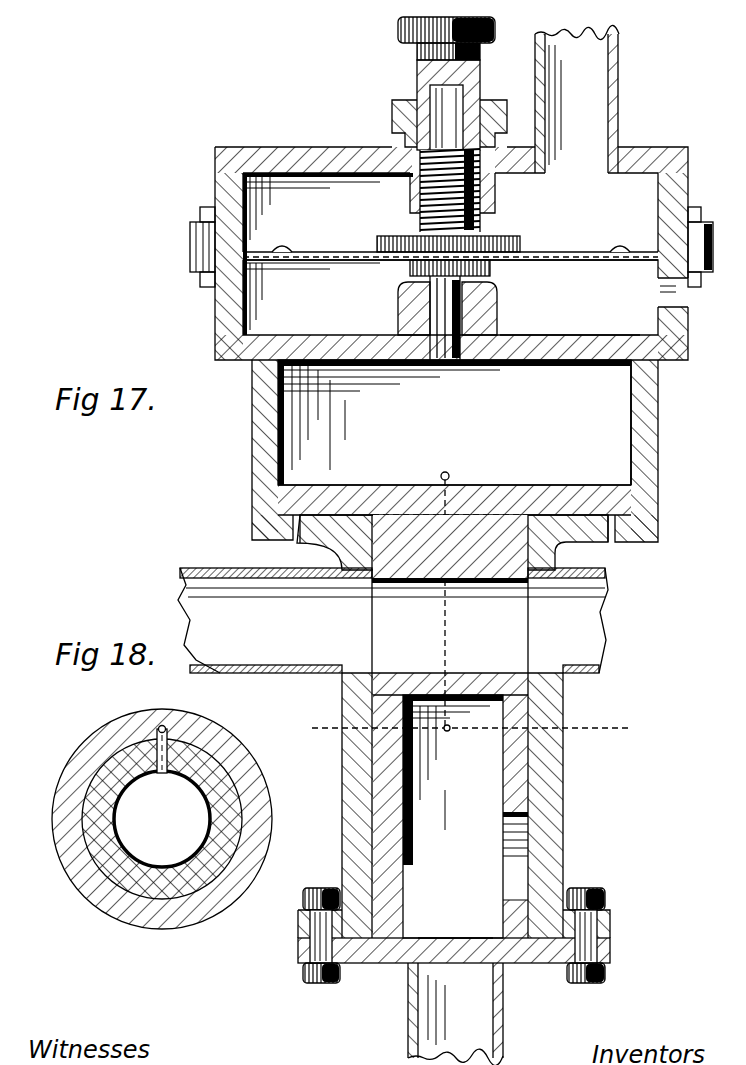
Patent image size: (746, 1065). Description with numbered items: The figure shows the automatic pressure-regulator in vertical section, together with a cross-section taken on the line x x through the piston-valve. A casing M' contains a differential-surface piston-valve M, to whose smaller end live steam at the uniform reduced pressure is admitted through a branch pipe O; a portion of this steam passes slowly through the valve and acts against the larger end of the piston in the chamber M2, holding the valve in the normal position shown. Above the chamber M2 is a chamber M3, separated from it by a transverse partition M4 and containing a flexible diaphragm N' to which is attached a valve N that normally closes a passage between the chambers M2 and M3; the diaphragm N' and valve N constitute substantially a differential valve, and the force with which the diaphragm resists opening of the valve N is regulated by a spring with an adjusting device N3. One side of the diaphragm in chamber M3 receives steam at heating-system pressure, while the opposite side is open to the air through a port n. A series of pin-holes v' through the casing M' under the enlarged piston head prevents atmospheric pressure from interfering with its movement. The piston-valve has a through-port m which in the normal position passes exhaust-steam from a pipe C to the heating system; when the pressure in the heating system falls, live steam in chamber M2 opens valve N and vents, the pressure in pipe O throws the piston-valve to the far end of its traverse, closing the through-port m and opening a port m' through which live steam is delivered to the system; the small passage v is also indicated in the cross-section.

In FIG. 17, the adjusting device N3 is at (420, 76).
In FIG. 17, the branch pipe O is at (513, 545).
In FIG. 17, the chamber M3 is at (451, 253).
In FIG. 17, the chamber M2 is at (488, 226).
In FIG. 17, the valve N is at (448, 269).
In FIG. 17, the flexible diaphragm N' is at (450, 267).
In FIG. 17, the transverse partition M4 is at (580, 344).
In FIG. 17, the port n is at (690, 300).
In FIG. 17, the differential-surface piston-valve M is at (455, 451).
In FIG. 18, the differential-surface piston-valve M is at (131, 819).
In FIG. 17, the casing M' is at (662, 422).
In FIG. 18, the casing M' is at (146, 819).
In FIG. 17, the port v is at (436, 593).
In FIG. 18, the port v is at (162, 761).
In FIG. 17, the pin-holes v' is at (465, 638).
In FIG. 17, the pipe C is at (393, 620).
In FIG. 17, the through-port m is at (450, 726).
In FIG. 18, the through-port m is at (162, 819).
In FIG. 17, the section line x is at (472, 730).
In FIG. 17, the port m' is at (454, 828).